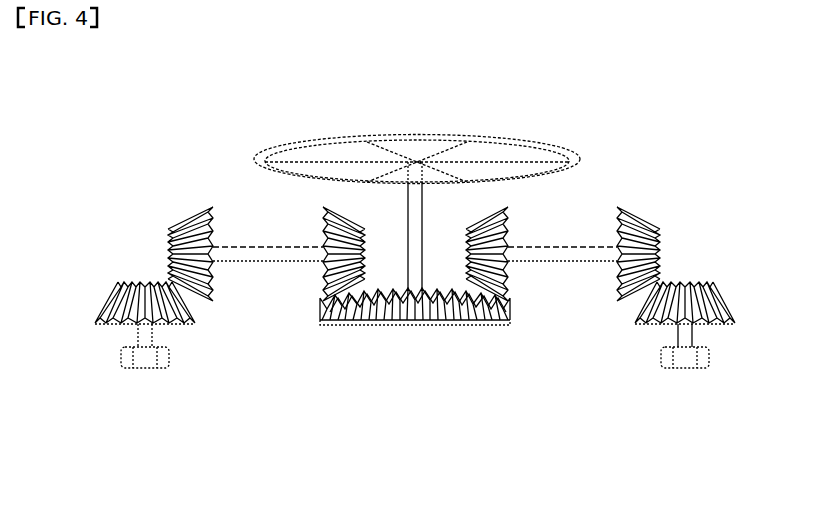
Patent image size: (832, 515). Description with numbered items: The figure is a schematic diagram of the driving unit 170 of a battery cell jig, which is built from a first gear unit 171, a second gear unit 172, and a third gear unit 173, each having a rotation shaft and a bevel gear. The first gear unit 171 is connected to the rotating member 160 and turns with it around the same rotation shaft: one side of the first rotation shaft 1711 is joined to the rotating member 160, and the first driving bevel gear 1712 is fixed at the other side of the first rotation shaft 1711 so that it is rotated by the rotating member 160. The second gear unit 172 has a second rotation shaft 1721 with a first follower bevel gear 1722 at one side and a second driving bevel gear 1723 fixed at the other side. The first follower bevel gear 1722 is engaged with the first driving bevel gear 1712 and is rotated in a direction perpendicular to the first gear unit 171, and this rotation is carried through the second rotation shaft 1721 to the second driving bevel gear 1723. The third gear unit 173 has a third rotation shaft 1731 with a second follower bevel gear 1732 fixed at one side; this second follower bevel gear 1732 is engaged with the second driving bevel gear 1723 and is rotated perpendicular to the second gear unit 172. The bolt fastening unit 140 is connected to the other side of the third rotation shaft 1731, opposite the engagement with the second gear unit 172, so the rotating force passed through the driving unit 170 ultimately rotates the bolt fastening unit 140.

The bolt fastening unit 140 is at (683, 368).
The rotating member 160 is at (571, 149).
The driving unit 170 is at (158, 105).
The first gear unit 171 is at (311, 297).
The first rotation shaft 1711 is at (414, 203).
The first driving bevel gear 1712 is at (433, 325).
The second gear unit 172 is at (417, 324).
The second rotation shaft 1721 is at (558, 243).
The first follower bevel gear 1722 is at (508, 284).
The second driving bevel gear 1723 is at (619, 225).
The third gear unit 173 is at (446, 387).
The third rotation shaft 1731 is at (694, 337).
The second follower bevel gear 1732 is at (722, 293).